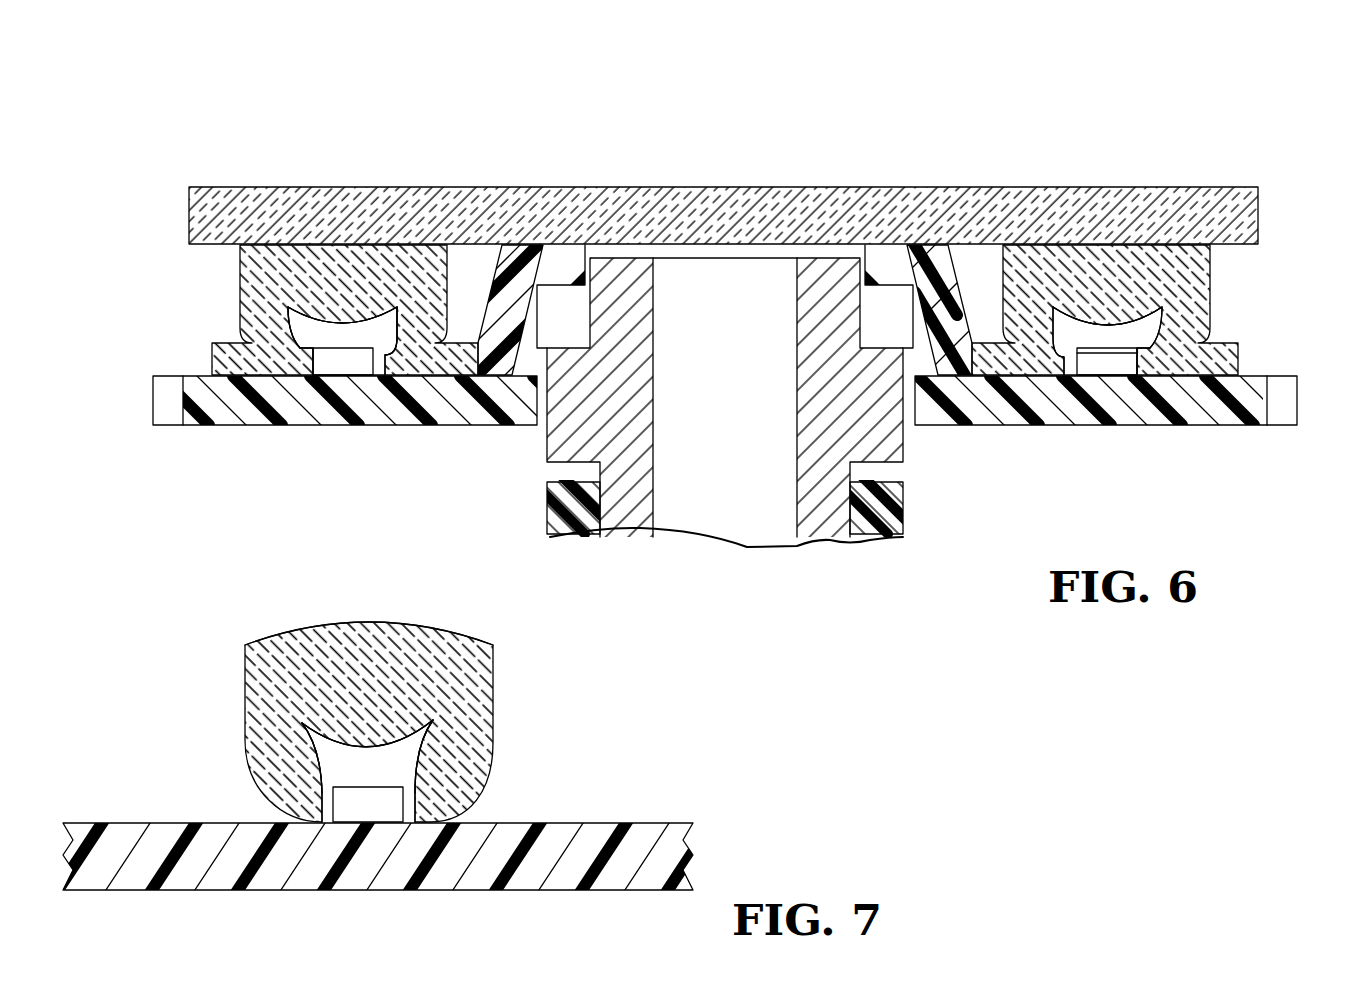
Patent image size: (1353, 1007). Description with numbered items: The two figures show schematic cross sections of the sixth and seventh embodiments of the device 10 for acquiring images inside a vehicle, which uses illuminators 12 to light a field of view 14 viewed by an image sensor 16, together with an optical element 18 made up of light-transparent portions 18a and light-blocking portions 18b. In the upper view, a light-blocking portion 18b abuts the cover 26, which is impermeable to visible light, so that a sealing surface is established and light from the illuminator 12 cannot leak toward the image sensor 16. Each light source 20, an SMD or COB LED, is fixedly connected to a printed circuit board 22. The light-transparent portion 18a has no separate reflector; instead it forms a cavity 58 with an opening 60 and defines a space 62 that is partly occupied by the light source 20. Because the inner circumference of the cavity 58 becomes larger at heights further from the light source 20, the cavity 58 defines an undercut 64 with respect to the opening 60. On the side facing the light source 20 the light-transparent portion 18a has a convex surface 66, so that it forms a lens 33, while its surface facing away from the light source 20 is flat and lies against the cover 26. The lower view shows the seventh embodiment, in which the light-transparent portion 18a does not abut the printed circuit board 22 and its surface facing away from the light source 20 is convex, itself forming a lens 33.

In FIG. 6, the device 10 is at (1283, 150).
In FIG. 6, the illuminator 12 is at (322, 397).
In FIG. 6, the field of view 14 is at (240, 295).
In FIG. 6, the image sensor 16 is at (722, 508).
In FIG. 6, the optical element 18 is at (413, 285).
In FIG. 6, the light-transparent portion 18a is at (253, 285).
In FIG. 7, the light-transparent portion 18a is at (283, 663).
In FIG. 6, the light-blocking portion 18b is at (517, 255).
In FIG. 6, the light source 20 is at (341, 362).
In FIG. 7, the light source 20 is at (348, 808).
In FIG. 6, the printed circuit board 22 is at (450, 412).
In FIG. 7, the printed circuit board 22 is at (210, 875).
In FIG. 6, the cover 26 is at (742, 220).
In FIG. 6, the lens 33 is at (1130, 318).
In FIG. 7, the lens 33 is at (443, 625).
In FIG. 6, the cavity 58 is at (328, 342).
In FIG. 7, the cavity 58 is at (403, 755).
In FIG. 6, the opening 60 is at (380, 382).
In FIG. 7, the opening 60 is at (317, 807).
In FIG. 6, the space 62 is at (372, 316).
In FIG. 7, the space 62 is at (352, 767).
In FIG. 6, the undercut 64 is at (288, 307).
In FIG. 7, the undercut 64 is at (313, 753).
In FIG. 6, the convex surface 66 is at (337, 322).
In FIG. 7, the convex surface 66 is at (377, 747).